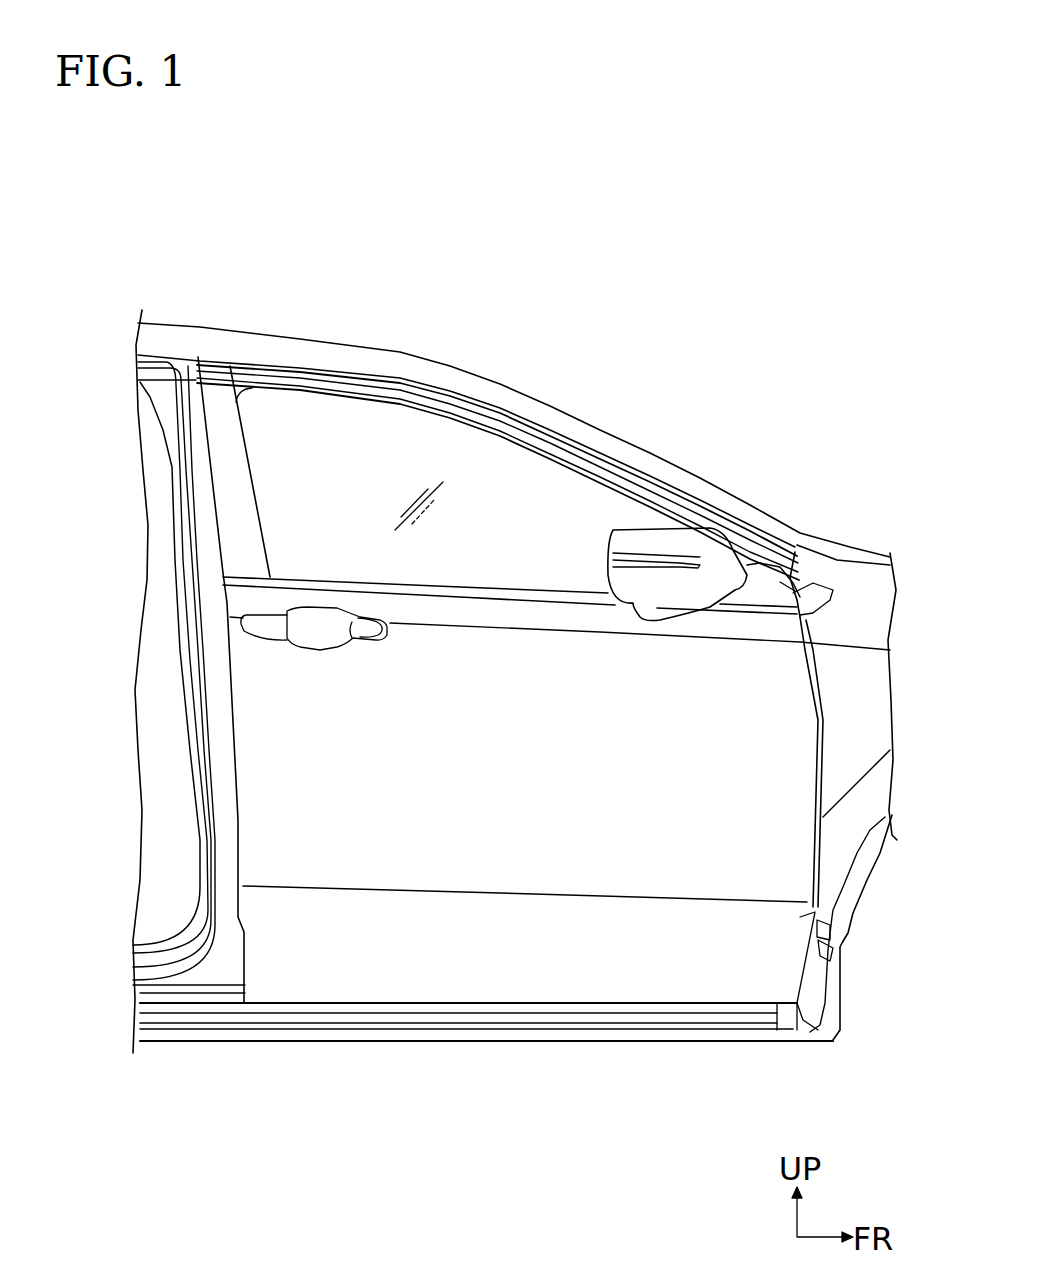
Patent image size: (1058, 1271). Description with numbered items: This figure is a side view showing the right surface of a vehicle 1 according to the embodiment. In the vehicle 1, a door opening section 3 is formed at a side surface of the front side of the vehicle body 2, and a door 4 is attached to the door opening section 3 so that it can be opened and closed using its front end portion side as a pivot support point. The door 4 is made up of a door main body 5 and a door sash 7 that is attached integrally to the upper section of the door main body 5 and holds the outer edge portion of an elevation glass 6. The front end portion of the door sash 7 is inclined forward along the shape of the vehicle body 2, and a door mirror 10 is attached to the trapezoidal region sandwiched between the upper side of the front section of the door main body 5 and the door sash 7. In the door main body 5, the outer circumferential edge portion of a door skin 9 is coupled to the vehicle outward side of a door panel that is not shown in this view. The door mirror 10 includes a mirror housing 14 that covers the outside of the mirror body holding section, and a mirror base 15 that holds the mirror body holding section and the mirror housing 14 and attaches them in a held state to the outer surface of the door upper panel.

The vehicle 1 is at (677, 286).
The vehicle body 2 is at (172, 328).
The door opening section 3 is at (822, 764).
The door 4 is at (338, 1000).
The door main body 5 is at (478, 747).
The elevation glass 6 is at (410, 425).
The door sash 7 is at (543, 427).
The door skin 9 is at (553, 857).
The door mirror 10 is at (719, 523).
The mirror housing 14 is at (664, 532).
The mirror base 15 is at (763, 563).